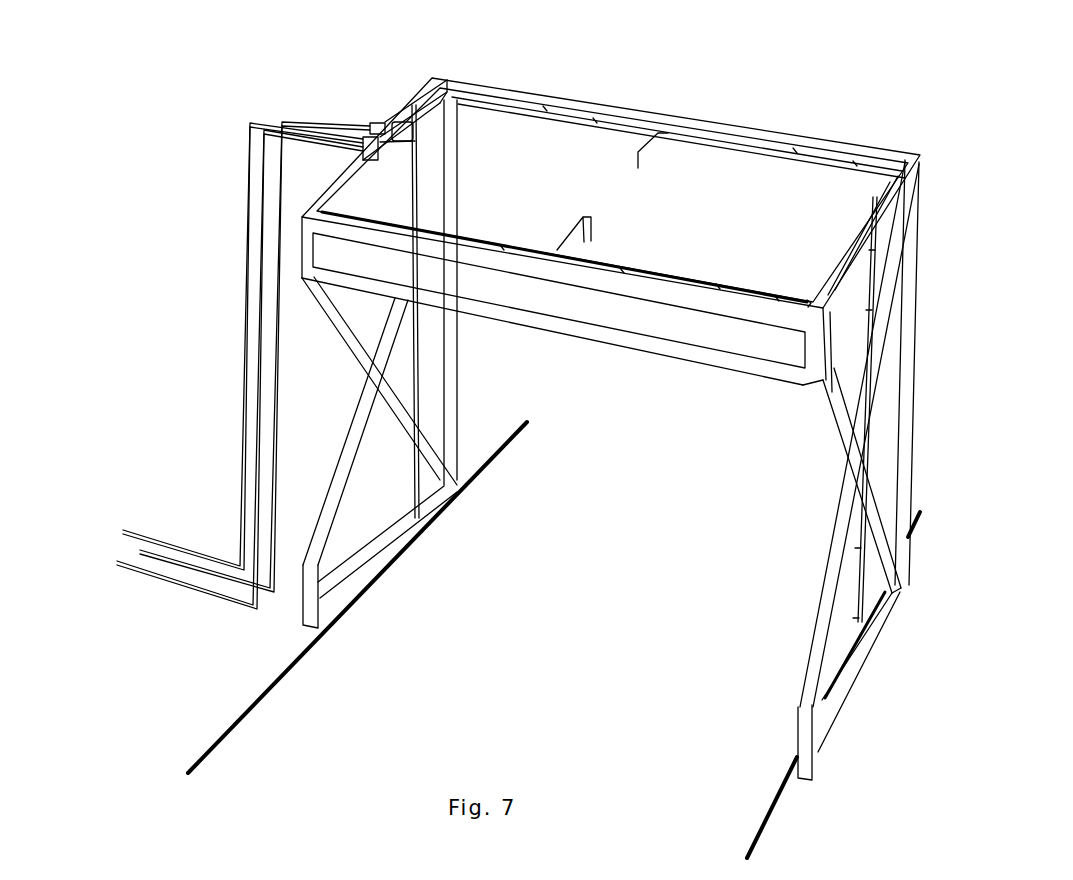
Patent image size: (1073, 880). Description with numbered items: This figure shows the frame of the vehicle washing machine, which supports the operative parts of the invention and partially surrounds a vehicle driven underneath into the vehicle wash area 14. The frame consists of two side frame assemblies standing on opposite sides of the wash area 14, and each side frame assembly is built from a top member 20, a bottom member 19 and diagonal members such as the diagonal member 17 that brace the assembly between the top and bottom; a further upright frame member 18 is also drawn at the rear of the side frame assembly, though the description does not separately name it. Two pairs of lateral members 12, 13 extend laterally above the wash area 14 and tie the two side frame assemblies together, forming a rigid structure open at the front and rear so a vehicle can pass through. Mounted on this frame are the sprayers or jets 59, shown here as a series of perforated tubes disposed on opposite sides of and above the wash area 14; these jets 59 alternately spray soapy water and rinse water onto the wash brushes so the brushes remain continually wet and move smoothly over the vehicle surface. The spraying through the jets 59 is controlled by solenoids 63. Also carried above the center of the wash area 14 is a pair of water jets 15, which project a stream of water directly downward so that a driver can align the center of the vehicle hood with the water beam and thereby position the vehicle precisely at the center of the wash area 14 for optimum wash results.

The lateral member 12 is at (603, 288).
The lateral member 13 is at (700, 355).
The vehicle wash area 14 is at (640, 557).
The water jets 15 is at (593, 227).
The diagonal member 17 is at (887, 306).
The rear leg post 18 is at (908, 400).
The bottom member 19 is at (873, 647).
The top member 20 is at (883, 202).
The jets 59 is at (593, 120).
The solenoids 63 is at (372, 127).